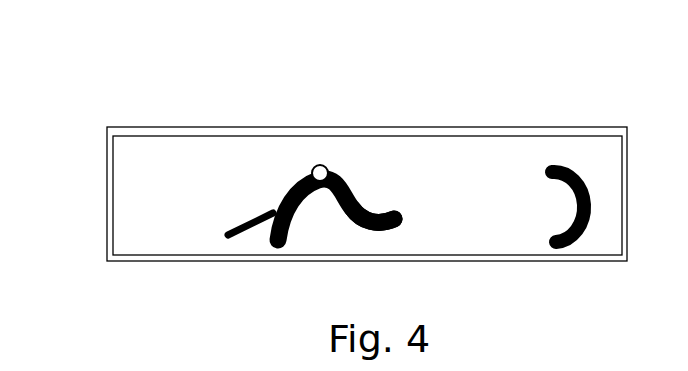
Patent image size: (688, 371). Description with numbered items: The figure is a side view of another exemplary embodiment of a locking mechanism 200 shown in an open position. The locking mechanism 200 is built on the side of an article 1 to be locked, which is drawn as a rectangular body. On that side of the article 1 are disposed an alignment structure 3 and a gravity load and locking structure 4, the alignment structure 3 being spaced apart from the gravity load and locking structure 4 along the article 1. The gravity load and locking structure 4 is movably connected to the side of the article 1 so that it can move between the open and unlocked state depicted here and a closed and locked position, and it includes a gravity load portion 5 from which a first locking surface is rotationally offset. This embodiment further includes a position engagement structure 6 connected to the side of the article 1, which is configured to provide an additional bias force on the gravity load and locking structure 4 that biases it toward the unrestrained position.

The article 1 is at (430, 132).
The alignment structure 3 is at (568, 165).
The gravity load and locking structure 4 is at (316, 166).
The gravity load portion 5 is at (380, 208).
The position engagement structure 6 is at (247, 222).
The locking mechanism 200 is at (512, 288).